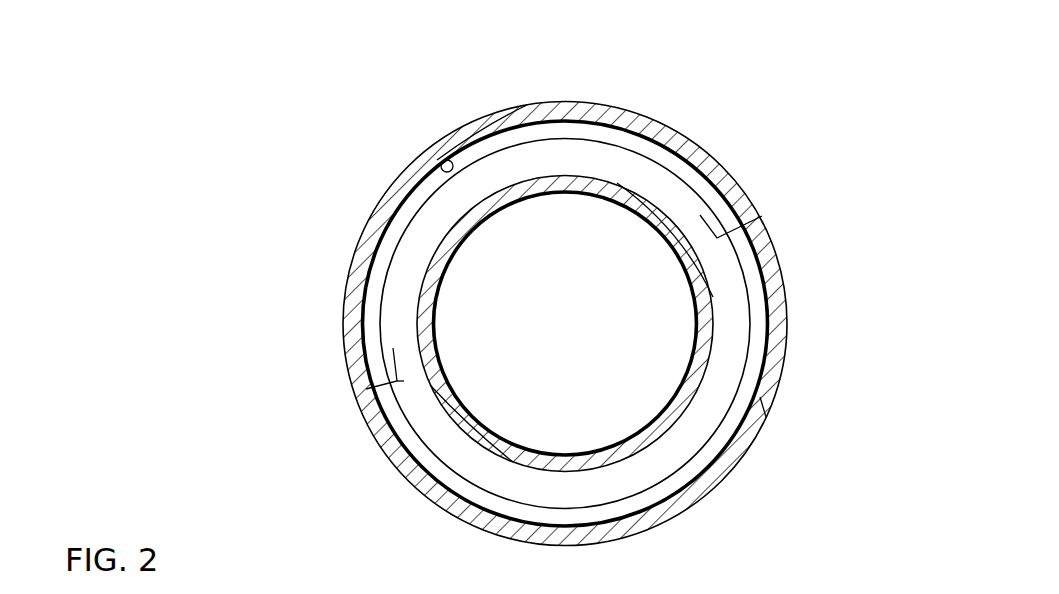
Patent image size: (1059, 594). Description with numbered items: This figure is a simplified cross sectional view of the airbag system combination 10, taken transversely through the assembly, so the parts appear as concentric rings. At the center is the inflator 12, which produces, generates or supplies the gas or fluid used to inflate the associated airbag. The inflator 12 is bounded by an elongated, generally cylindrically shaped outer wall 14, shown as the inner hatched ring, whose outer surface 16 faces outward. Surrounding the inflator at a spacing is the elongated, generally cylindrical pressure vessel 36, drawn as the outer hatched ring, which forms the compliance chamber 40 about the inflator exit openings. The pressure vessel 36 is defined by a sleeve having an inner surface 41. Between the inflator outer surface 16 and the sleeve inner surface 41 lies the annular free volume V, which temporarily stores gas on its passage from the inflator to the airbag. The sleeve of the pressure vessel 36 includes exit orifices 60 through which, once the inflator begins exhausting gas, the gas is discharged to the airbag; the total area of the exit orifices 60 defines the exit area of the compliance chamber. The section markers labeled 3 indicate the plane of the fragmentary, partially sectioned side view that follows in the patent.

The airbag system combination 10 is at (541, 297).
The inflator 12 is at (464, 434).
The outer wall 14 is at (530, 462).
The outer surface 16 is at (613, 462).
The pressure vessel 36 is at (362, 246).
The compliance chamber 40 is at (657, 458).
The inner surface 41 is at (443, 160).
The exit orifices 60 is at (765, 218).
The free volume V is at (703, 407).
The section line 3- 3 is at (808, 240).